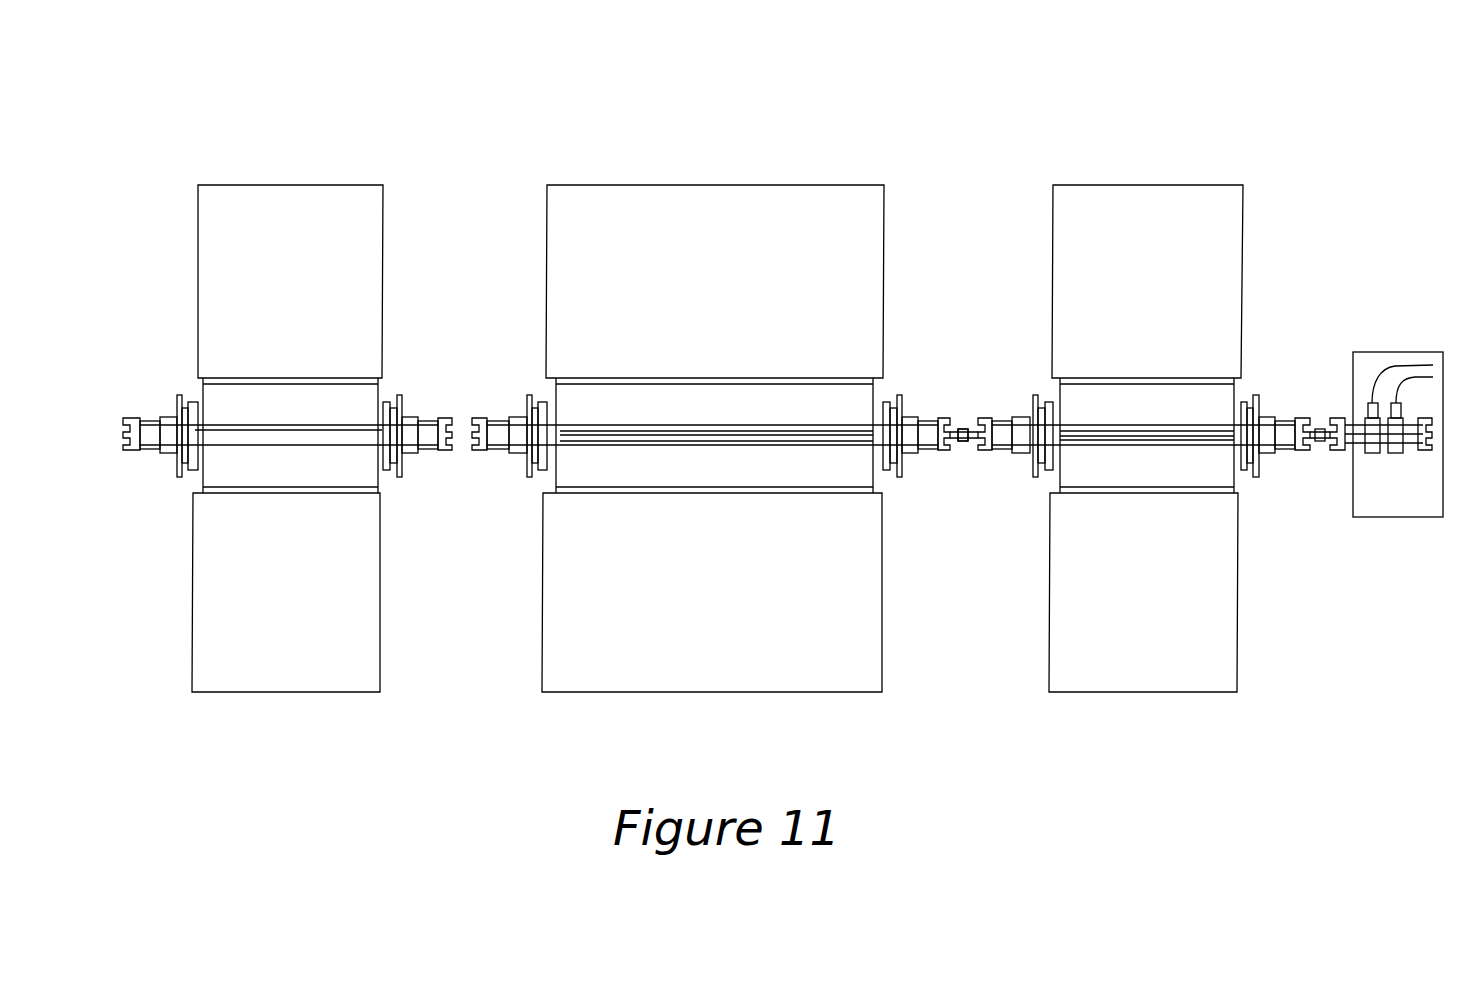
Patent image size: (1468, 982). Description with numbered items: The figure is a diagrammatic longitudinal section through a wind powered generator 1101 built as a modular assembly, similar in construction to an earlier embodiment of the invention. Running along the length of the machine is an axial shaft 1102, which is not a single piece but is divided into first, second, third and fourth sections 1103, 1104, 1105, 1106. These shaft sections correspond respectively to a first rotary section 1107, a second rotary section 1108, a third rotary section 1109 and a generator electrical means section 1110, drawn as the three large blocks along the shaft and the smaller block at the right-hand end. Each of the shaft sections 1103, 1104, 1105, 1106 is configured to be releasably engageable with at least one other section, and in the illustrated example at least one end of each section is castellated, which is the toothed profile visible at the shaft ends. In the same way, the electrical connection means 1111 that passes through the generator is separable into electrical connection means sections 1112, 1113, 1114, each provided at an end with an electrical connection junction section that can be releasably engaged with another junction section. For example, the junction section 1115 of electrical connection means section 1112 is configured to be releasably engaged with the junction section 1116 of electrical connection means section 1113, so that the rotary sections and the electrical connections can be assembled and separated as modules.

The wind powered generator 1101 is at (711, 177).
The axial shaft 1102 is at (165, 437).
The first section 1103 is at (408, 468).
The second section 1104 is at (937, 460).
The third section 1105 is at (1287, 462).
The fourth section 1106 is at (1338, 409).
The first rotary section 1107 is at (236, 181).
The second rotary section 1108 is at (820, 178).
The third rotary section 1109 is at (1147, 182).
The generator electrical means section 1110 is at (1377, 330).
The electrical connection means 1111 is at (788, 431).
The electrical connection means section 1112 is at (677, 436).
The electrical connection means section 1113 is at (1138, 431).
The electrical connection means section 1114 is at (1372, 436).
The junction section 1115 is at (963, 431).
The junction section 1116 is at (963, 447).